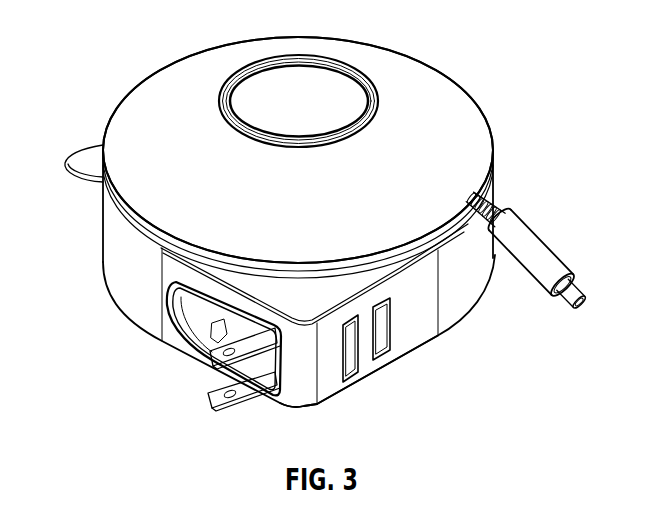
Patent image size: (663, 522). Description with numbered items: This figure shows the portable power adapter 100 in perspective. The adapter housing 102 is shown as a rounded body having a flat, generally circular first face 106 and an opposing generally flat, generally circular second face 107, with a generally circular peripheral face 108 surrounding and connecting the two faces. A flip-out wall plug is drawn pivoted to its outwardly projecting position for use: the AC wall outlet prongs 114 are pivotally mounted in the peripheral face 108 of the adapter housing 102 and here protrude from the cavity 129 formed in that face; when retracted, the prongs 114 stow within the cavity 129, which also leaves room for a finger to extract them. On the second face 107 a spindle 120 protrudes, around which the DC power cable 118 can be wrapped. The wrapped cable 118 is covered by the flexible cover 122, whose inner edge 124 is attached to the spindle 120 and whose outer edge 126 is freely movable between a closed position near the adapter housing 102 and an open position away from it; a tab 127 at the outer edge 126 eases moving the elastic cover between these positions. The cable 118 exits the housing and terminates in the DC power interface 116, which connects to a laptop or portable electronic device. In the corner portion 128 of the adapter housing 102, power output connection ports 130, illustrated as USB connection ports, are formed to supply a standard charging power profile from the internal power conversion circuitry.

The portable power adapter 100 is at (115, 29).
The adapter housing 102 is at (101, 248).
The first face 106 is at (331, 400).
The second face 107 is at (320, 310).
The peripheral face 108 is at (484, 283).
The AC wall outlet prongs 114 is at (215, 410).
The DC power interface 116 is at (572, 293).
The DC power cable 118 is at (473, 197).
The spindle 120 is at (267, 92).
The flexible cover 122 is at (418, 170).
The inner edge 124 is at (362, 78).
The outer edge 126 is at (490, 163).
The tab 127 is at (85, 160).
The corner portion 128 is at (302, 399).
The cavity 129 is at (197, 329).
The power output connection ports 130 is at (355, 373).